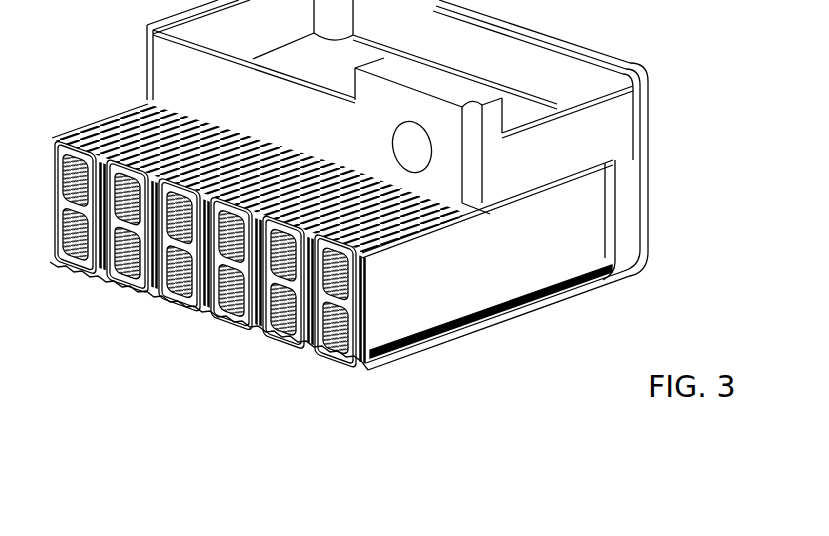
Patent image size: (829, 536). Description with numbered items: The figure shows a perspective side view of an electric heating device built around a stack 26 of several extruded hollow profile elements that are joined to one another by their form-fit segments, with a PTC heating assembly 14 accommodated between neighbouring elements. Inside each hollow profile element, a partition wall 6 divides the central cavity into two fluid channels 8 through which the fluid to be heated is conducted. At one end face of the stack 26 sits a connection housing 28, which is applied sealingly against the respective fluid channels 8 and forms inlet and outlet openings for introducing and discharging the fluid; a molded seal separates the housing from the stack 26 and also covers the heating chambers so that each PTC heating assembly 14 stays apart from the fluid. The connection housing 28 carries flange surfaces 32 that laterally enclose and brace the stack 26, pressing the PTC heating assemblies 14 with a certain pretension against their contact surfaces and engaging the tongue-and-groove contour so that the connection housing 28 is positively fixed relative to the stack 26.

The partition wall 6 is at (256, 262).
The fluid channels 8 is at (210, 280).
The PTC heating assembly 14 is at (283, 324).
The stack 26 is at (388, 367).
The connection housing 28 is at (434, 212).
The flange surfaces 32 is at (608, 264).